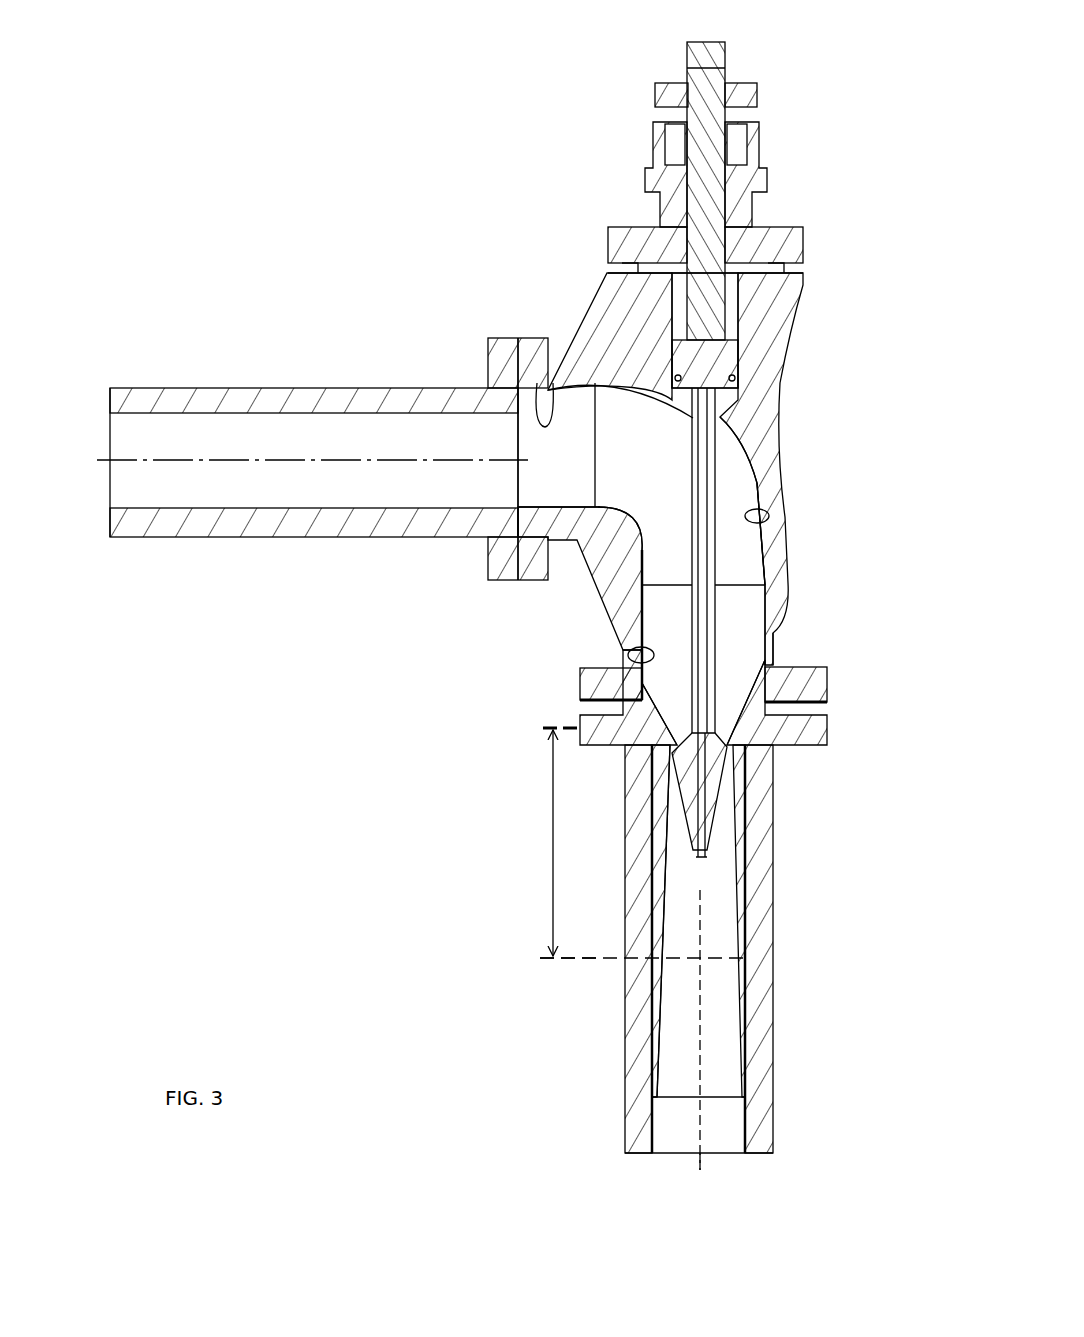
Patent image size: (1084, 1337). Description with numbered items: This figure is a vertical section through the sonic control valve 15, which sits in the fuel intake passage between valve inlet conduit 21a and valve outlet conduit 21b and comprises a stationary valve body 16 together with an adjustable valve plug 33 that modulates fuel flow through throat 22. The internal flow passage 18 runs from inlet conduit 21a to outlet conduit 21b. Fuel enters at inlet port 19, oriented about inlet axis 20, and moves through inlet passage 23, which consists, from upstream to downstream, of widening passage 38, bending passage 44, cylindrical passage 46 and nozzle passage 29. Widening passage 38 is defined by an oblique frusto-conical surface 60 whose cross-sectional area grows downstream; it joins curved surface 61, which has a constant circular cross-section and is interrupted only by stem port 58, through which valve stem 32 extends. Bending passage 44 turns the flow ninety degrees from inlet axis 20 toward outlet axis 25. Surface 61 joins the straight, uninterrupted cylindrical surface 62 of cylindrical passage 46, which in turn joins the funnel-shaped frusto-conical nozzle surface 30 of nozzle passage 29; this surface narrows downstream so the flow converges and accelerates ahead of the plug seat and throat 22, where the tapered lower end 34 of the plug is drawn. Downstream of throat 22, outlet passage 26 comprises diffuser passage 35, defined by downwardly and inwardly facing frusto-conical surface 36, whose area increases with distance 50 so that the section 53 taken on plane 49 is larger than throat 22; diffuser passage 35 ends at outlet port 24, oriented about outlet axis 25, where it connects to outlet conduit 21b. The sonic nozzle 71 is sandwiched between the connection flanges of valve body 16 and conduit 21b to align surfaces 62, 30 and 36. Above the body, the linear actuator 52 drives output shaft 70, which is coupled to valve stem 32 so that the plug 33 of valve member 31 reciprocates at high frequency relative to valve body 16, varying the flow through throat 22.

The sonic control valve 15 is at (432, 195).
The valve body 16 is at (803, 410).
The flow passage 18 is at (749, 557).
The inlet port 19 is at (512, 484).
The inlet axis 20 is at (96, 463).
The valve inlet conduit 21a is at (292, 386).
The valve outlet conduit 21b is at (623, 1065).
The throat 22 is at (683, 733).
The inlet passage 23 is at (608, 594).
The outlet port 24 is at (721, 1098).
The outlet axis 25 is at (704, 1164).
The outlet passage 26 is at (679, 930).
The nozzle passage 29 is at (736, 708).
The nozzle surface 30 is at (775, 660).
The valve member 31 is at (743, 628).
The valve stem 32 is at (719, 487).
The valve plug 33 is at (721, 758).
The plug tip 34 is at (712, 828).
The diffuser passage 35 is at (683, 1030).
The diffuser surface 36 is at (740, 908).
The widening passage 38 is at (559, 445).
The bending passage 44 is at (656, 485).
The cylindrical passage 46 is at (703, 603).
The plane 49 is at (582, 958).
The distance 50 is at (553, 815).
The linear actuator 52 is at (797, 120).
The section 53 is at (729, 960).
The stem port 58 is at (687, 418).
The oblique frusto-conical surface 60 is at (556, 380).
The curved surface 61 is at (769, 516).
The cylindrical surface 62 is at (628, 657).
The output shaft 70 is at (704, 236).
The sonic nozzle 71 is at (829, 704).